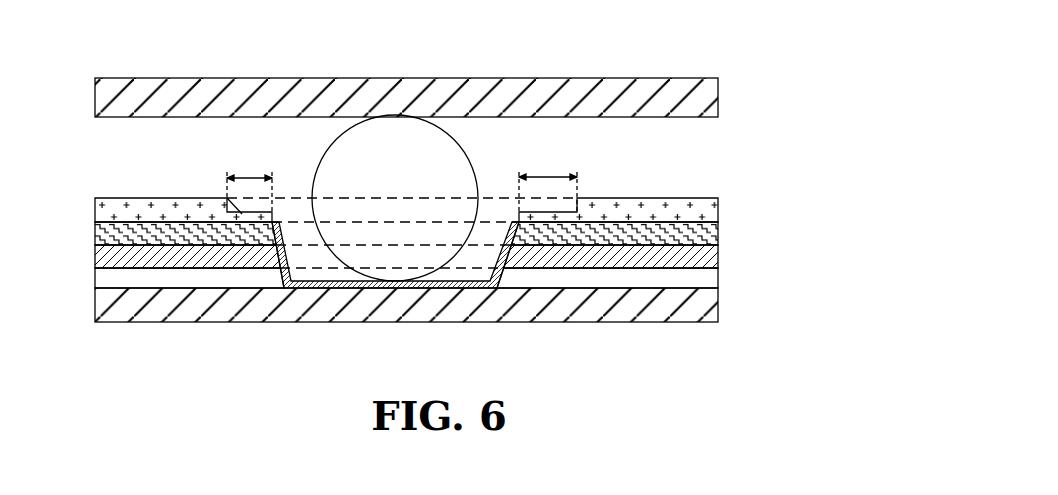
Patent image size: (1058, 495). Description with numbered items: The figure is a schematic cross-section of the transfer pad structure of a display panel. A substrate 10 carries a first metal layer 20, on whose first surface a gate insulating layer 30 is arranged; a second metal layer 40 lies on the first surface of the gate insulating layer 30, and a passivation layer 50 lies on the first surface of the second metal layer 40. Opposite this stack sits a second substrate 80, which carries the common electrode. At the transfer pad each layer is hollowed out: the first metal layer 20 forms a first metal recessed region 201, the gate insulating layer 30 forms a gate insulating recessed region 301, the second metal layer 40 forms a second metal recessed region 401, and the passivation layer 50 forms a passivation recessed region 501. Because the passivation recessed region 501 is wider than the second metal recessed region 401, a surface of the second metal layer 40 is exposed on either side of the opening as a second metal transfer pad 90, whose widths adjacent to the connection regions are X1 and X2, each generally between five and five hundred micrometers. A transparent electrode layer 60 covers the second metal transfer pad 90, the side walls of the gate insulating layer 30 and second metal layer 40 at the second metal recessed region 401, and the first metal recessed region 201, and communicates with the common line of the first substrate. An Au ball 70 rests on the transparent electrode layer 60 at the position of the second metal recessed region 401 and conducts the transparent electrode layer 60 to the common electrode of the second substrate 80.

The substrate 10 is at (668, 297).
The first metal layer 20 is at (655, 275).
The gate insulating layer 30 is at (719, 261).
The second metal layer 40 is at (693, 232).
The passivation layer 50 is at (612, 209).
The transparent electrode layer 60 is at (442, 283).
The Au ball 70 is at (442, 190).
The second substrate 80 is at (567, 98).
The second metal transfer pad 90 is at (226, 193).
The first metal recessed region 201 is at (341, 275).
The gate insulating recessed region 301 is at (320, 248).
The second metal recessed region 401 is at (297, 235).
The passivation recessed region 501 is at (298, 215).
The width of the second metal transfer pad adjacent to the first connection region X1 is at (249, 182).
The width of the second metal transfer pad adjacent to the second connection region X2 is at (548, 182).